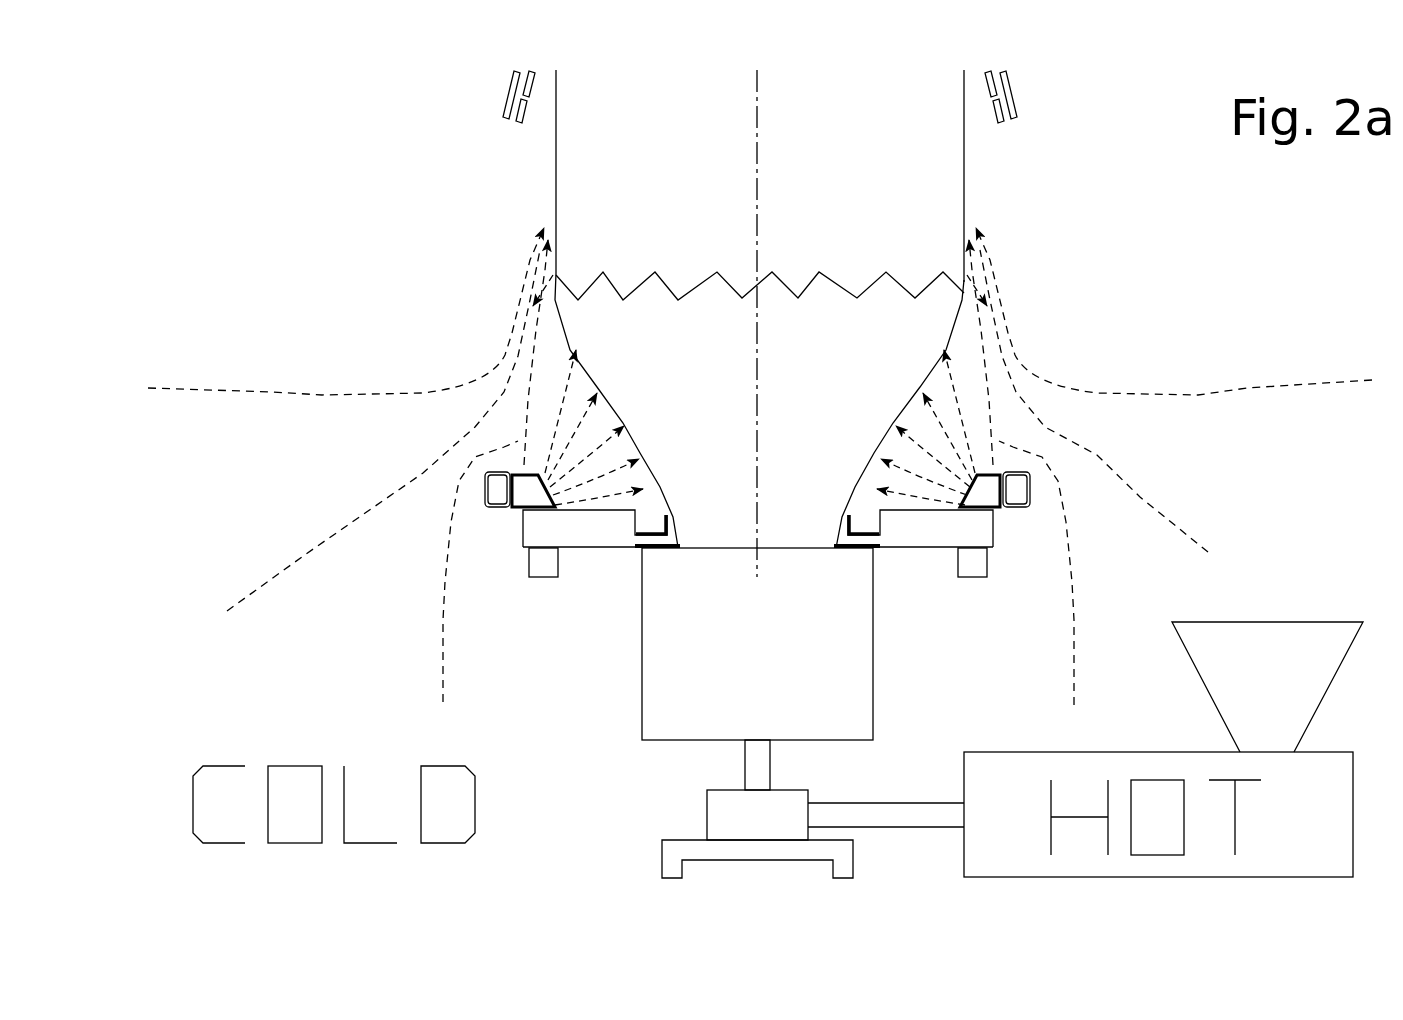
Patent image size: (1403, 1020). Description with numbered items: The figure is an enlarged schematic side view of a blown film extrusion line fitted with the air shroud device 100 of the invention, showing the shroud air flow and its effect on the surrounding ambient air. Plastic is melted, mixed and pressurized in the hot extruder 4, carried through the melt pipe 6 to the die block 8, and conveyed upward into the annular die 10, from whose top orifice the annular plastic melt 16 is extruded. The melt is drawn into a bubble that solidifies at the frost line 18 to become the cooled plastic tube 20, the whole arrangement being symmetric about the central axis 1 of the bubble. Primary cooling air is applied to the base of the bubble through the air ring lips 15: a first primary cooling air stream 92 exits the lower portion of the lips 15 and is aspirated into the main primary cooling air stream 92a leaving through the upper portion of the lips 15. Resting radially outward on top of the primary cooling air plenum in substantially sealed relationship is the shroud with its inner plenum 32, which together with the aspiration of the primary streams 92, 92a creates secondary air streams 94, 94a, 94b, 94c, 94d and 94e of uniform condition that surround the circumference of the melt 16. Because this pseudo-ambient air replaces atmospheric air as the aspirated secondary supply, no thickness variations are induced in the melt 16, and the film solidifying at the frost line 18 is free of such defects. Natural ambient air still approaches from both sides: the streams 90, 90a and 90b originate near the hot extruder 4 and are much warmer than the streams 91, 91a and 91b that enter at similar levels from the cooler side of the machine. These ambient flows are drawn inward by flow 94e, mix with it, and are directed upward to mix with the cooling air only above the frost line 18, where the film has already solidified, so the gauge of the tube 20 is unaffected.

The central axis 1 is at (756, 124).
The extruder 4 is at (1308, 835).
The melt pipe 6 is at (901, 817).
The die block 8 is at (728, 812).
The annular die 10 is at (692, 648).
The air ring lips 15 is at (667, 549).
The annular plastic melt 16 is at (902, 389).
The frost line 18 is at (823, 270).
The plastic tube 20 is at (966, 193).
The inner plenum 32 is at (977, 497).
The secondary ambient air stream 90 is at (1076, 662).
The secondary ambient air stream 90a is at (1145, 496).
The secondary ambient air stream 90b is at (1207, 388).
The secondary ambient air stream 91 is at (441, 649).
The secondary ambient air stream 91a is at (303, 554).
The secondary ambient air stream 91b is at (320, 390).
The first primary cooling air stream 92 is at (833, 535).
The main primary cooling air stream 92a is at (847, 510).
The secondary air stream 94 is at (642, 482).
The secondary air stream 94a is at (640, 453).
The secondary air stream 94b is at (627, 420).
The secondary air stream 94c is at (600, 388).
The secondary air stream 94d is at (577, 346).
The secondary air stream 94e is at (557, 265).
The air shroud device 100 is at (1020, 520).